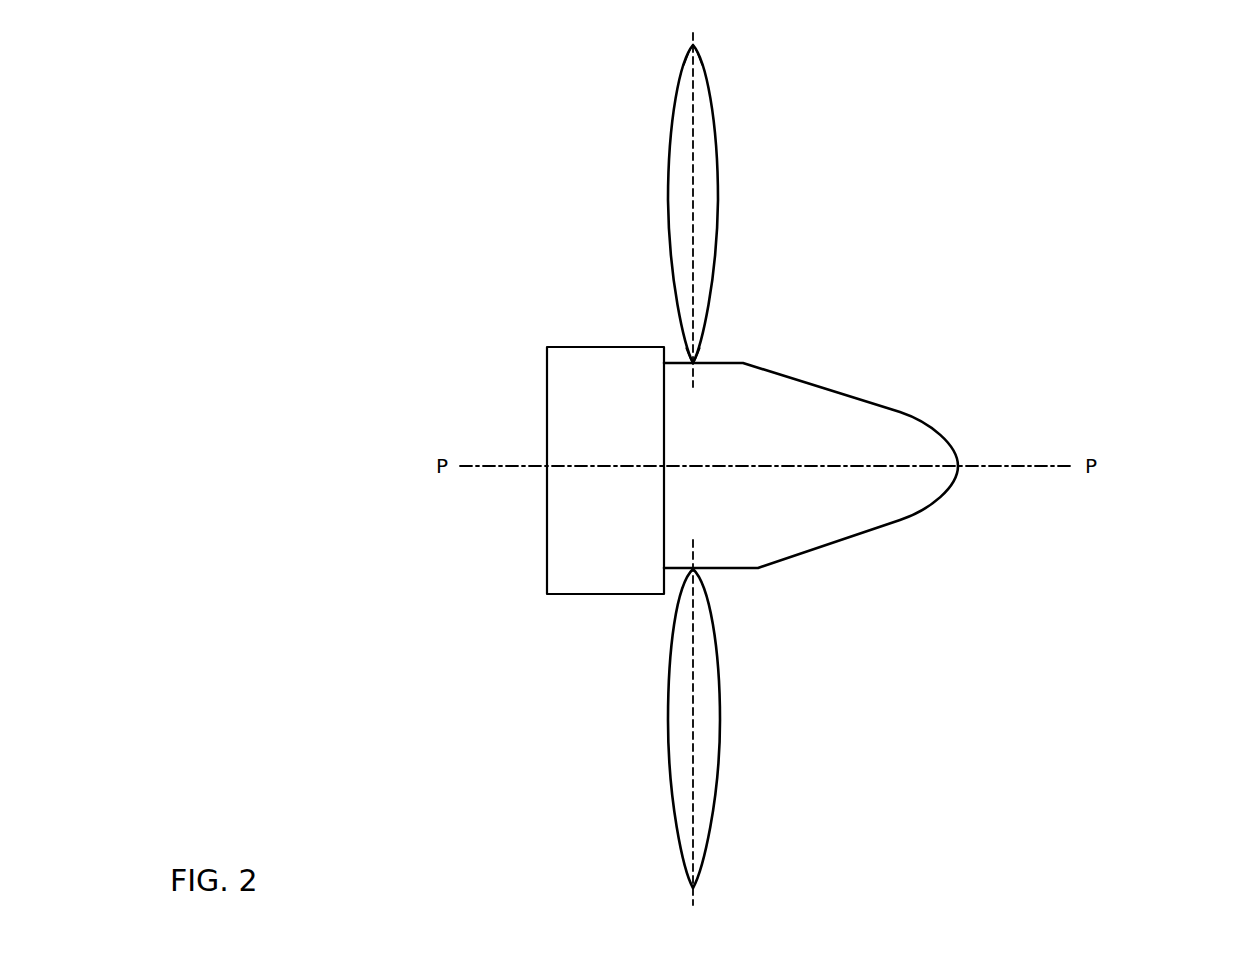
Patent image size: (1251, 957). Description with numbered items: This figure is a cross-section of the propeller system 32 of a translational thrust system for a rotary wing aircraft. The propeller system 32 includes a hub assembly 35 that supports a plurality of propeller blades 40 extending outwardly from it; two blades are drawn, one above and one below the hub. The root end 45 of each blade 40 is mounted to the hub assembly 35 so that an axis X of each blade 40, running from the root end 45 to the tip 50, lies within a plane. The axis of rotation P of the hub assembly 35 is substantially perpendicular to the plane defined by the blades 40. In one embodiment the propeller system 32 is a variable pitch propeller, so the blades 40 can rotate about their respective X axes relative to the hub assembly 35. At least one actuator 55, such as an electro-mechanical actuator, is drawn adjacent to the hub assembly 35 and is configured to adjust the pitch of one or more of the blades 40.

The propeller system 32 is at (1112, 200).
The hub assembly 35 is at (902, 446).
The propeller blade 40 is at (668, 212).
The root end 45 is at (700, 360).
The tip 50 is at (697, 48).
The actuator 55 is at (605, 470).